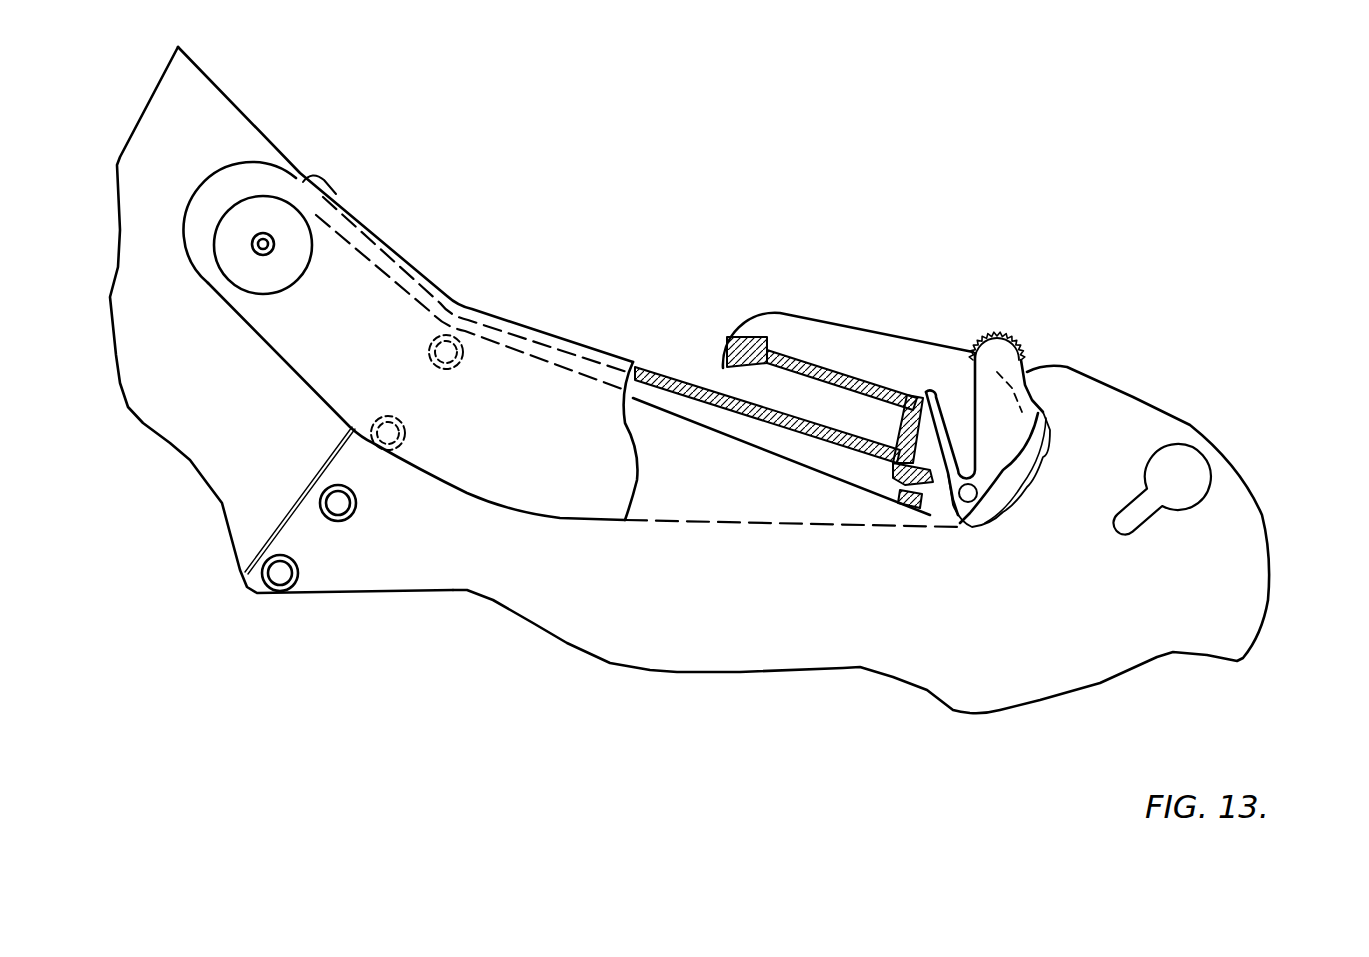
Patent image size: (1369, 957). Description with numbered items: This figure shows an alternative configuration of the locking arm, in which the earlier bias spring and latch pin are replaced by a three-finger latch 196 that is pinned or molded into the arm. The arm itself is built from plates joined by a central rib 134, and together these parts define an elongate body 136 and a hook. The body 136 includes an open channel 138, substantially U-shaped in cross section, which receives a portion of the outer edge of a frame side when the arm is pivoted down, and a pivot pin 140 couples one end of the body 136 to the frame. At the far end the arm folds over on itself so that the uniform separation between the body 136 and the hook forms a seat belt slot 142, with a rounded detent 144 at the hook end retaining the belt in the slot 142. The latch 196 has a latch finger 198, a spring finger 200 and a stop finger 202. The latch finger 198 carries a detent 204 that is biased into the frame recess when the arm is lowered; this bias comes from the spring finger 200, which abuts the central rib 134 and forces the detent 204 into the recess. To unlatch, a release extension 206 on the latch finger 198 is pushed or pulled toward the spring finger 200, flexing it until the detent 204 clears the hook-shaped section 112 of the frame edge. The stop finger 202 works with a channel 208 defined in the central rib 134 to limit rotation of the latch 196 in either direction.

The hook-shaped section 112 is at (1193, 428).
The central rib 134 is at (550, 333).
The body 136 is at (470, 500).
The open channel 138 is at (723, 423).
The pivot pin 140 is at (305, 213).
The seat belt slot 142 is at (815, 393).
The rounded detent 144 is at (727, 368).
The three-finger latch 196 is at (957, 511).
The latch finger 198 is at (1043, 410).
The spring finger 200 is at (936, 407).
The stop finger 202 is at (937, 480).
The detent 204 is at (1047, 413).
The release extension 206 is at (1003, 335).
The channel 208 is at (897, 497).